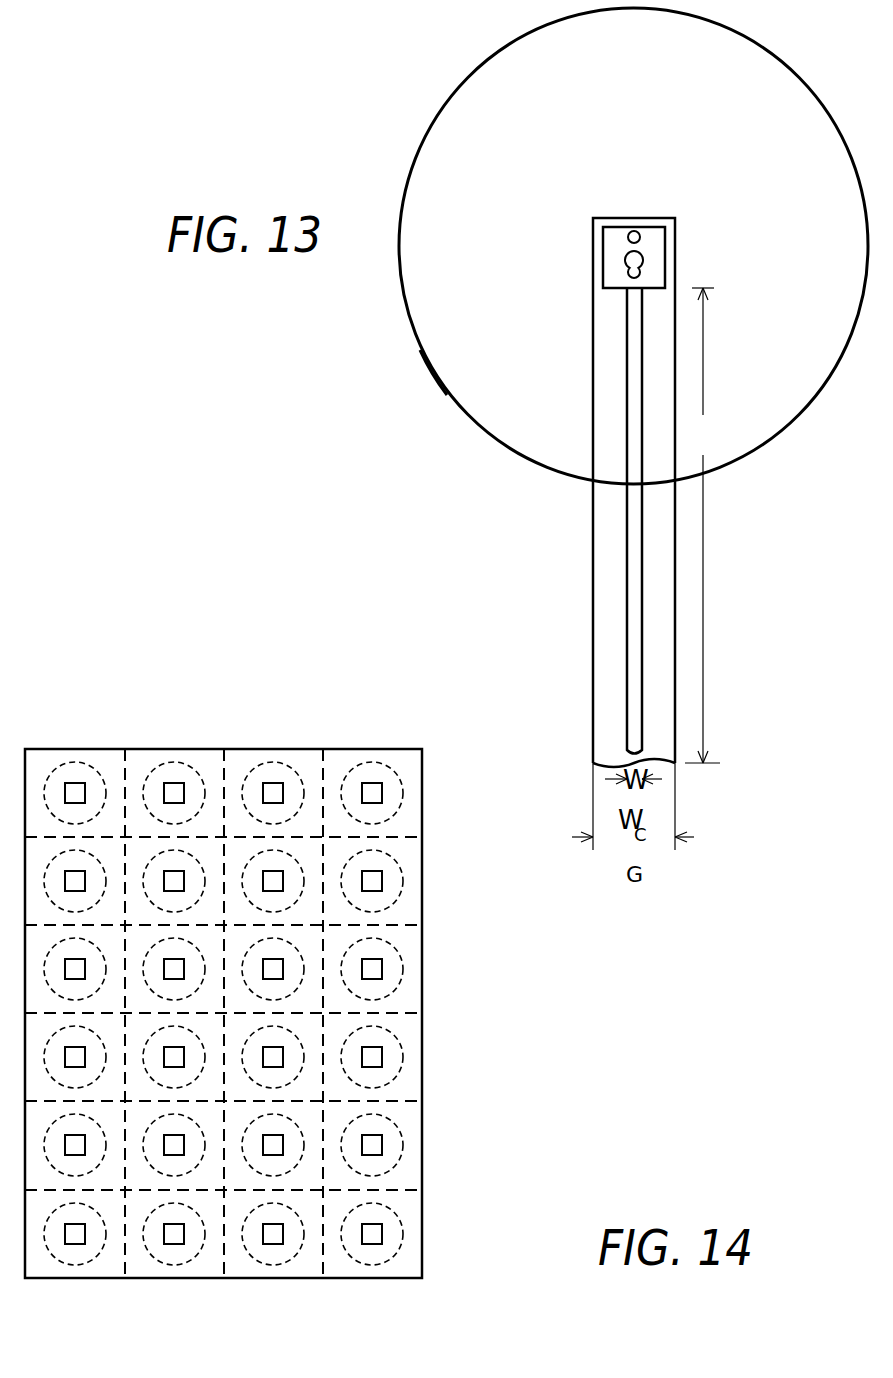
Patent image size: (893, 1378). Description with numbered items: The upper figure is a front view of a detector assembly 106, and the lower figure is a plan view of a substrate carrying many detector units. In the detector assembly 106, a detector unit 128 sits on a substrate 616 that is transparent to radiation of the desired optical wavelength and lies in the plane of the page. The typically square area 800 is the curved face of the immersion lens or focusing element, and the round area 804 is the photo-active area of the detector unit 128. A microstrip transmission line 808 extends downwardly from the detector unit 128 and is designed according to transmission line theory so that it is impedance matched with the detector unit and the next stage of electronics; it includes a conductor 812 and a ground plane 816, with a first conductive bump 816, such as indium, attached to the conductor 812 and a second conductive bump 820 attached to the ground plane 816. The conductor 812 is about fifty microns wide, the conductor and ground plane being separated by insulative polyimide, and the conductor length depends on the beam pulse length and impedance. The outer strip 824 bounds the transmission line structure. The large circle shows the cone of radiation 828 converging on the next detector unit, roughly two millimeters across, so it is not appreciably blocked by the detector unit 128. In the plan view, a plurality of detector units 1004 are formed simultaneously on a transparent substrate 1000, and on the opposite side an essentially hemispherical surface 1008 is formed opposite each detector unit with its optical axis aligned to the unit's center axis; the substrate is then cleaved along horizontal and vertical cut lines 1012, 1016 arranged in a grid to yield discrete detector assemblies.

In FIG. 13, the substrate 616 is at (456, 34).
In FIG. 13, the detector unit 128 is at (632, 148).
In FIG. 13, the second conductive material or bump 820 is at (634, 231).
In FIG. 13, the round active area 804 is at (626, 257).
In FIG. 13, the square area 800 is at (662, 275).
In FIG. 13, the ground plane 816 is at (628, 286).
In FIG. 13, the cone of radiation 828 is at (447, 395).
In FIG. 13, the detector assembly 106 is at (462, 524).
In FIG. 13, the cantilever strip 824 is at (603, 618).
In FIG. 13, the microstrip transmission line 808 is at (703, 532).
In FIG. 13, the conductor 812 is at (636, 568).
In FIG. 14, the transparent substrate 1000 is at (422, 1116).
In FIG. 14, the detector units 1004 is at (383, 1150).
In FIG. 14, the essentially hemispherical surface 1008 is at (398, 1163).
In FIG. 14, the horizontal cut lines 1012 is at (406, 1101).
In FIG. 14, the vertical cut lines 1016 is at (323, 1280).